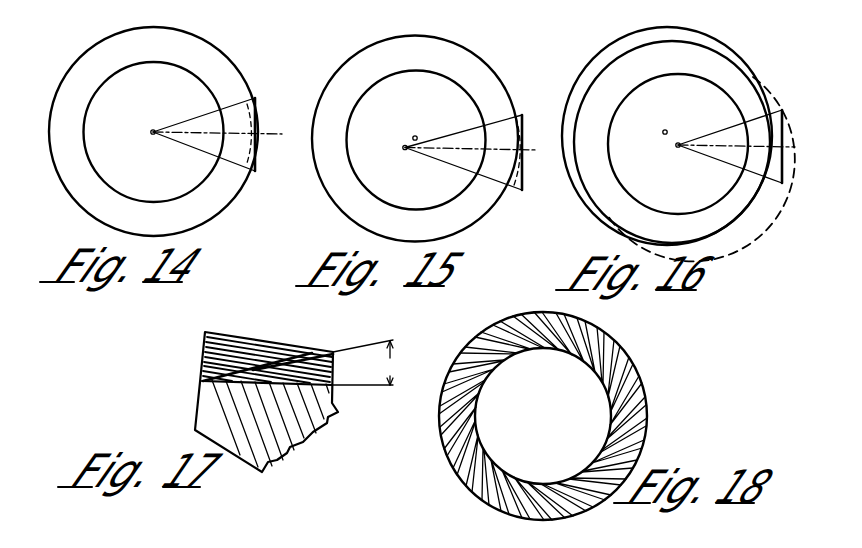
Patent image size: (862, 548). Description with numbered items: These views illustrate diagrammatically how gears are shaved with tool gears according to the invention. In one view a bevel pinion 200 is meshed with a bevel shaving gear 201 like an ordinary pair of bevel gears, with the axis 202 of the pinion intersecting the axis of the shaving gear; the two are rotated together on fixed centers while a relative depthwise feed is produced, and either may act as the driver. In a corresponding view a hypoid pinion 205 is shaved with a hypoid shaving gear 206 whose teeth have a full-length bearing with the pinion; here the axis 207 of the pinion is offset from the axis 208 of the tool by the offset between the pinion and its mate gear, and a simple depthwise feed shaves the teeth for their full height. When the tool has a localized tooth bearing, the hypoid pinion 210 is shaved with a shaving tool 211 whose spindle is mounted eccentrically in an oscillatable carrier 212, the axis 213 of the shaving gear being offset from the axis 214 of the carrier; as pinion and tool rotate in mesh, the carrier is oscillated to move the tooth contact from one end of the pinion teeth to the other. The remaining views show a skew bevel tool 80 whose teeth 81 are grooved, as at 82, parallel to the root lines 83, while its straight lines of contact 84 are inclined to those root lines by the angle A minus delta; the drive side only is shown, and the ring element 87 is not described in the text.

In FIG. 14, the bevel pinion 200 is at (250, 101).
In FIG. 14, the bevel shaving gear 201 is at (104, 216).
In FIG. 14, the axis of the pinion 202 is at (243, 136).
In FIG. 15, the hypoid pinion 205 is at (507, 196).
In FIG. 14, the hypoid shaving gear 206 is at (150, 136).
In FIG. 15, the hypoid shaving gear 206 is at (368, 221).
In FIG. 15, the axis of the hypoid pinion 207 is at (524, 124).
In FIG. 15, the axis of the shaving tool 208 is at (417, 136).
In FIG. 16, the hypoid pinion 210 is at (768, 194).
In FIG. 16, the shaving tool 211 is at (662, 243).
In FIG. 16, the oscillatable carrier 212 is at (612, 50).
In FIG. 16, the axis of the shaving gear 213 is at (680, 143).
In FIG. 16, the axis of the carrier 214 is at (664, 130).
In FIG. 17, the tool 80 is at (223, 439).
In FIG. 17, the teeth 81 is at (232, 336).
In FIG. 18, the teeth 81 is at (612, 425).
In FIG. 17, the grooves 82 is at (332, 366).
In FIG. 17, the root lines 83 is at (347, 386).
In FIG. 17, the lines of contact 84 is at (308, 352).
In FIG. 18, the blade ring 87 is at (482, 498).